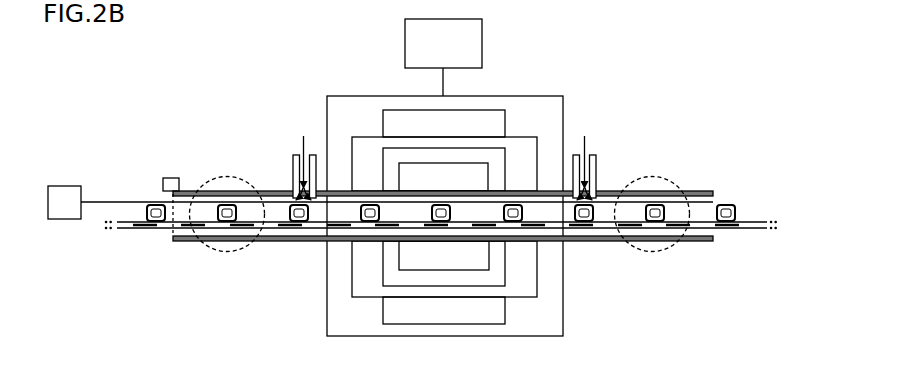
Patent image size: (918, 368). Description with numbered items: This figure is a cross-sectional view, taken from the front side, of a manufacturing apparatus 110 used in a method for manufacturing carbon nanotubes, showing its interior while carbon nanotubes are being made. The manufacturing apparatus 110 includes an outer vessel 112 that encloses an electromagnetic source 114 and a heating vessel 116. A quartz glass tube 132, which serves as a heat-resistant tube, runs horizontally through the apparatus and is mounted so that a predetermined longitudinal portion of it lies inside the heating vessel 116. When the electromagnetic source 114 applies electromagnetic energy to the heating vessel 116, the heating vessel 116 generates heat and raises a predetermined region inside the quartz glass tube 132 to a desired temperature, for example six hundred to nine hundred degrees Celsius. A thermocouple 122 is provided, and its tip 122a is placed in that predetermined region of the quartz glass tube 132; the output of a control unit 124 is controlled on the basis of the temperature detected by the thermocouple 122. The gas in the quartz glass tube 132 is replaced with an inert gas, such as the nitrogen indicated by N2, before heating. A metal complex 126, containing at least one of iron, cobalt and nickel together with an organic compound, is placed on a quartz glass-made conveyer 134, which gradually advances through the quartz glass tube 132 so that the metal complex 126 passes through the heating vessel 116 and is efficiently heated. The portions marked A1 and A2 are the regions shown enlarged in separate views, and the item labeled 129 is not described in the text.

The manufacturing apparatus 110 is at (575, 39).
The outer vessel 112 is at (553, 96).
The electromagnetic source 114 is at (505, 127).
The heating vessel 116 is at (382, 270).
The thermocouple 122 is at (67, 220).
The tip of the thermocouple 122a is at (440, 204).
The control unit 124 is at (482, 42).
The metal complex 126 is at (226, 222).
The semiconductor package after treatment 129 is at (648, 222).
The quartz glass tube 132 is at (695, 191).
The quartz glass-made conveyer 134 is at (728, 229).
The portion indicated by symbol A1 is at (227, 207).
The portion indicated by symbol A2 is at (652, 207).
The nitrogen gas supply nozzle N2 is at (443, 158).